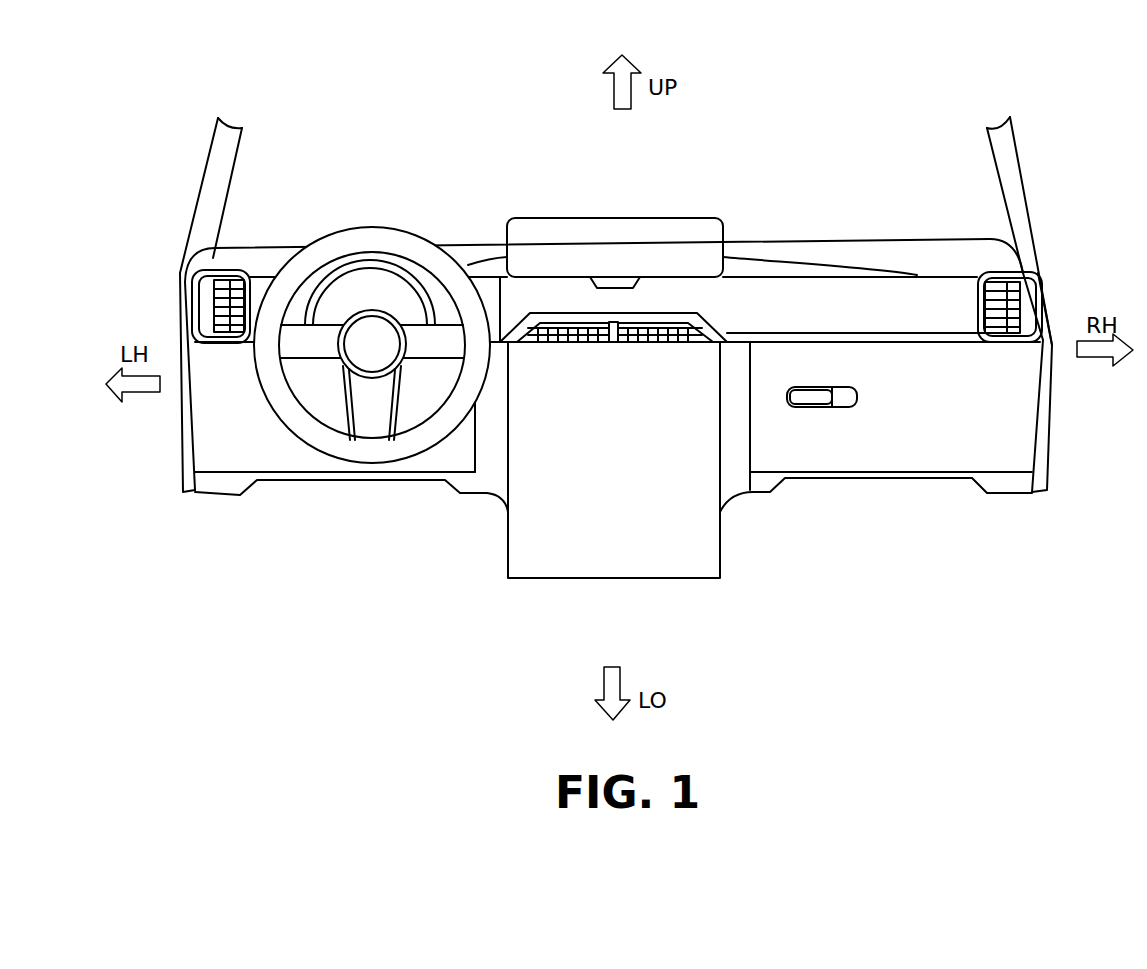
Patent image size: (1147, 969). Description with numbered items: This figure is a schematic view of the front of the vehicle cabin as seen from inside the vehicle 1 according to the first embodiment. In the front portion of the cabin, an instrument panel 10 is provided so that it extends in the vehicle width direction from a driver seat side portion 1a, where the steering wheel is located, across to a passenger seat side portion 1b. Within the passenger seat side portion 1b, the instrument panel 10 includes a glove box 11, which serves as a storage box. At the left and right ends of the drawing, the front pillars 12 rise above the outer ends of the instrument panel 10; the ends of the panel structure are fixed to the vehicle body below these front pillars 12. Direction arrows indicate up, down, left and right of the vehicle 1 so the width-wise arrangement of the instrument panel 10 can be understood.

The vehicle 1 is at (1042, 115).
The driver seat side portion 1a is at (344, 530).
The passenger seat side portion 1b is at (886, 531).
The instrument panel 10 is at (826, 292).
The glove box 11 is at (930, 372).
The front pillar 12 is at (210, 178).